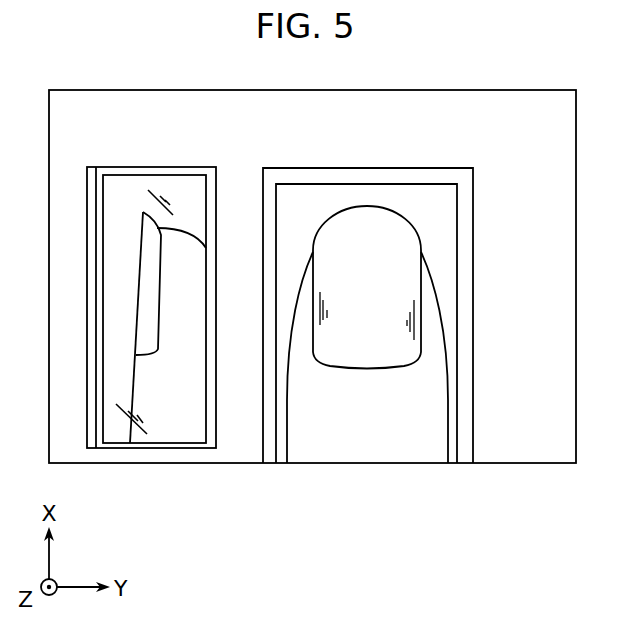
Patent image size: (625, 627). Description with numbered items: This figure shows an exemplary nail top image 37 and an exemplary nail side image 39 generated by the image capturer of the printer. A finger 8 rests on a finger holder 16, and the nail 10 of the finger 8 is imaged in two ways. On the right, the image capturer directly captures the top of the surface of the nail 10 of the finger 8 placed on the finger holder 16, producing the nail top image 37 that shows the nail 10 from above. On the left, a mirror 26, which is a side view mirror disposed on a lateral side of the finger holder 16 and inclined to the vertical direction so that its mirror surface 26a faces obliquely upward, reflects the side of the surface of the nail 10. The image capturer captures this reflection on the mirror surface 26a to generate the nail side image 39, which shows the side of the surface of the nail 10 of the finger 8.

The finger 8 is at (195, 388).
The nail 10 is at (150, 302).
The finger holder 16 is at (432, 168).
The mirror 26 is at (149, 168).
The mirror surface 26a is at (115, 188).
The nail top image 37 is at (438, 237).
The nail side image 39 is at (185, 207).